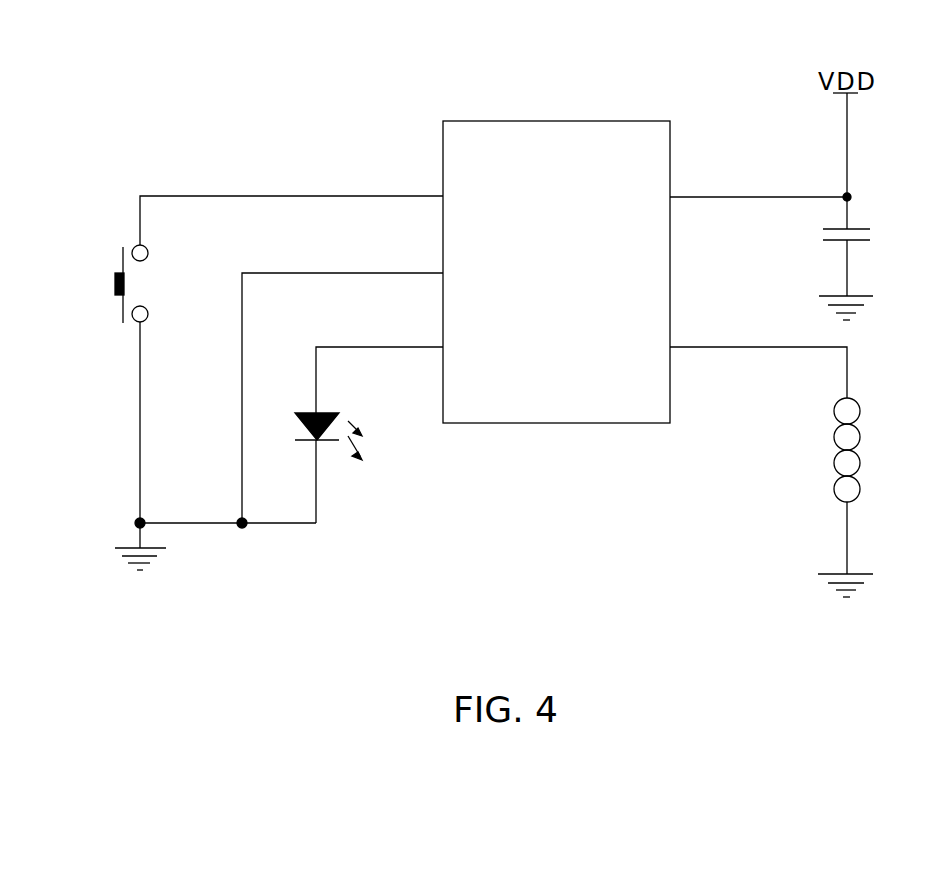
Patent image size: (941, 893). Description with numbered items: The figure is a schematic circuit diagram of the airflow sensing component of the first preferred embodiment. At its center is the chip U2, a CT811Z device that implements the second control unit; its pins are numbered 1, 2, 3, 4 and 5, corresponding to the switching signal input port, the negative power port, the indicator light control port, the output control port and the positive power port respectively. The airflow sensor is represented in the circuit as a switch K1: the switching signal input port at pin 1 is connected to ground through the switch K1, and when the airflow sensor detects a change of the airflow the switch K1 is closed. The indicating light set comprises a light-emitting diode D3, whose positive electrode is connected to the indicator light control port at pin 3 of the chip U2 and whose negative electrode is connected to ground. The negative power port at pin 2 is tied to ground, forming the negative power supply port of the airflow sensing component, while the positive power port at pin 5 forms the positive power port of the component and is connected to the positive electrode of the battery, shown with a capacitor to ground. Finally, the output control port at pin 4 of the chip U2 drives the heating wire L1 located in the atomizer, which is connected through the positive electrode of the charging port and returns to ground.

The SW pin of U2 1 is at (291, 212).
The GND pin of U2 2 is at (342, 389).
The LED pin of U2 3 is at (379, 371).
The OUT pin of U2 4 is at (758, 363).
The VDD pin of U2 5 is at (760, 190).
The chip U2 is at (556, 272).
The switch K1 is at (139, 384).
The LED light D3 is at (346, 461).
The heating wire L1 is at (856, 486).